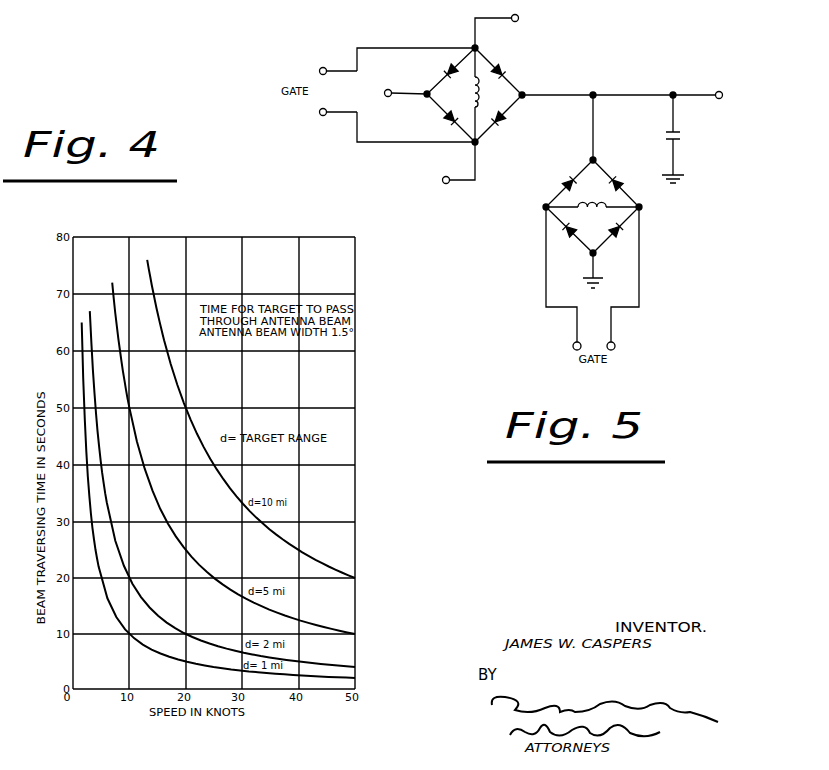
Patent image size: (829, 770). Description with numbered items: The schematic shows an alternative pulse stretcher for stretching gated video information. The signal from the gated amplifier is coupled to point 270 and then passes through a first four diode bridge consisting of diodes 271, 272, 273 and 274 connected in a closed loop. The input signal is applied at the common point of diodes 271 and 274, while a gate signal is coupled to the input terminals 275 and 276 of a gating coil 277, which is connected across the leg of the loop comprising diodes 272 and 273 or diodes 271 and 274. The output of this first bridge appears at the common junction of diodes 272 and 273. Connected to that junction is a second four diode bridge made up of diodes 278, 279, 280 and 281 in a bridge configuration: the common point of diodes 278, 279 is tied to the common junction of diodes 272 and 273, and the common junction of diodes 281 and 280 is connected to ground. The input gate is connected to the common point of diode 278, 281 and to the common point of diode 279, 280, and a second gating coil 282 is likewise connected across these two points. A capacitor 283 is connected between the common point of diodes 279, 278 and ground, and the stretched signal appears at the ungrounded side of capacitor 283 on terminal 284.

The point 270 is at (399, 84).
The diode 271 is at (455, 66).
The diode 272 is at (503, 76).
The diode 273 is at (505, 115).
The diode 274 is at (445, 117).
The input terminal 275 is at (515, 22).
The input terminal 276 is at (442, 176).
The gating coil 277 is at (471, 100).
The diode 278 is at (570, 181).
The diode 279 is at (617, 185).
The diode 280 is at (618, 229).
The diode 281 is at (570, 238).
The gating coil 282 is at (595, 210).
The capacitor 283 is at (679, 138).
The terminal 284 is at (733, 78).